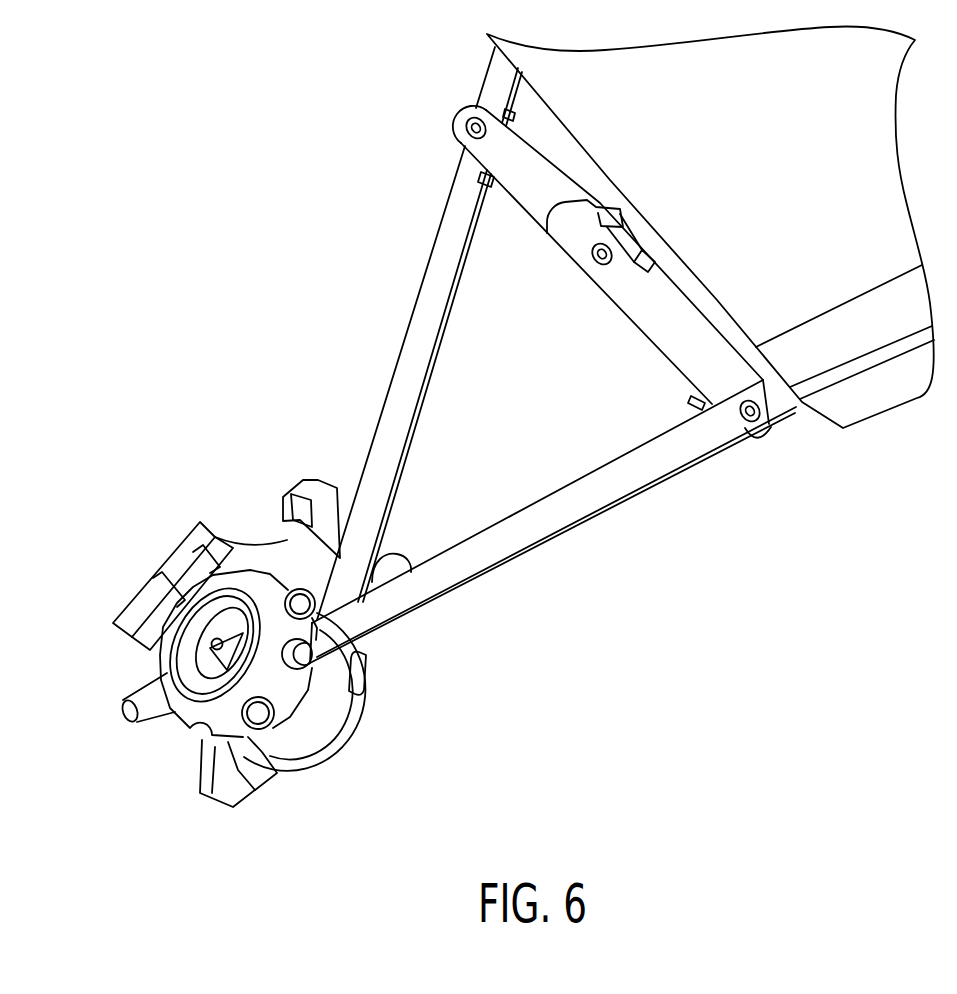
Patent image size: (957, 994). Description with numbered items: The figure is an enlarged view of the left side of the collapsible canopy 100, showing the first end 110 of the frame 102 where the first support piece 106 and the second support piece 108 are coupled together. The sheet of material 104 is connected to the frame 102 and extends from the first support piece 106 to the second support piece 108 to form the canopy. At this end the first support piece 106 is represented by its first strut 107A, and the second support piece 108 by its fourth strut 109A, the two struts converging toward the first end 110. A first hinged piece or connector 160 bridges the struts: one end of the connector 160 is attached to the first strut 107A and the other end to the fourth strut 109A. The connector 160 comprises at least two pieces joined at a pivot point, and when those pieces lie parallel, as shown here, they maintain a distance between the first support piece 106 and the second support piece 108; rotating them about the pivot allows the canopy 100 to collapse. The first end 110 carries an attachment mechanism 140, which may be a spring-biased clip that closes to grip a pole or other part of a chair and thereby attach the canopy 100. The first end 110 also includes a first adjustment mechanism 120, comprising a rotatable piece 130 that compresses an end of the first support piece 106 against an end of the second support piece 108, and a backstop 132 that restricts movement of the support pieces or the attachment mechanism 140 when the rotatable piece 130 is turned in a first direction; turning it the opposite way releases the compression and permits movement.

The collapsible canopy 100 is at (178, 175).
The frame 102 is at (553, 532).
The sheet of material 104 is at (883, 382).
The first support piece 106 is at (553, 521).
The first strut 107A is at (693, 470).
The second support piece 108 is at (417, 333).
The fourth strut 109A is at (397, 349).
The first end 110 is at (288, 777).
The first adjustment mechanism 120 is at (351, 697).
The rotatable piece 130 is at (185, 750).
The backstop 132 is at (353, 747).
The attachment mechanism 140 is at (182, 517).
The first hinged piece or connector 160 is at (608, 328).